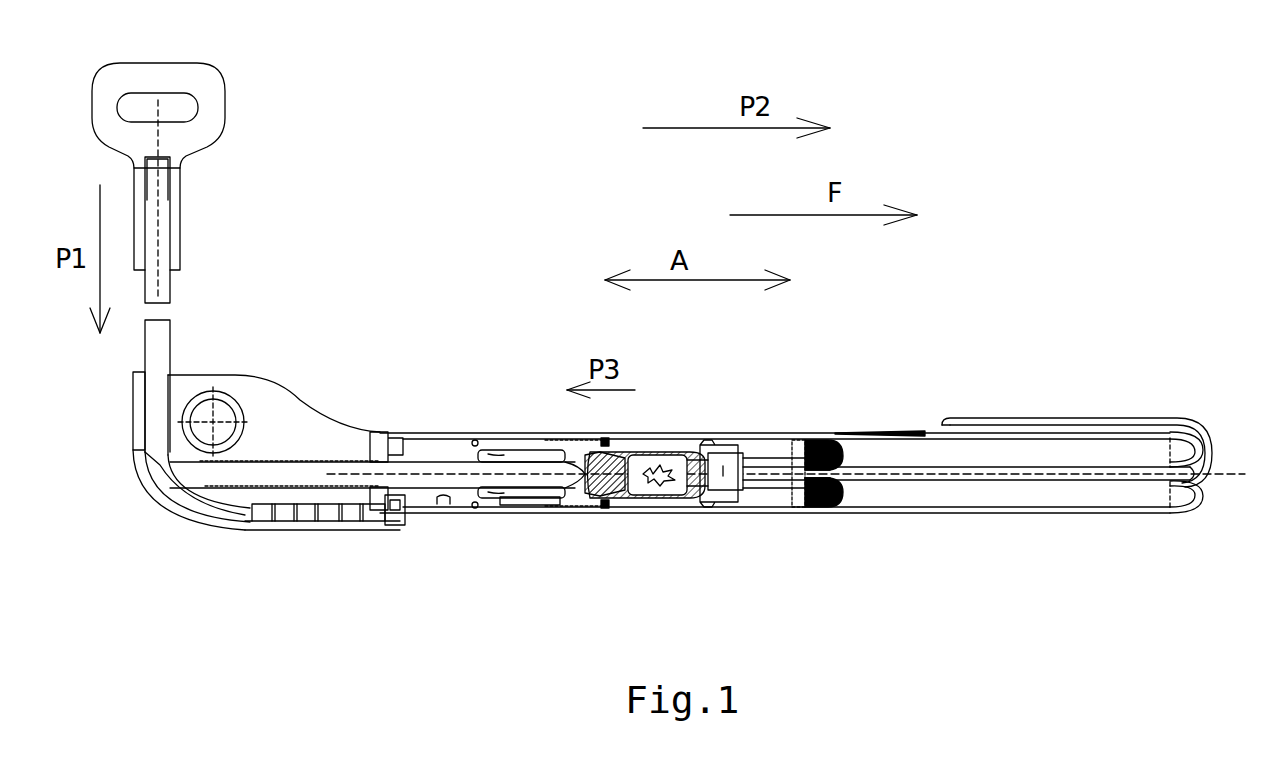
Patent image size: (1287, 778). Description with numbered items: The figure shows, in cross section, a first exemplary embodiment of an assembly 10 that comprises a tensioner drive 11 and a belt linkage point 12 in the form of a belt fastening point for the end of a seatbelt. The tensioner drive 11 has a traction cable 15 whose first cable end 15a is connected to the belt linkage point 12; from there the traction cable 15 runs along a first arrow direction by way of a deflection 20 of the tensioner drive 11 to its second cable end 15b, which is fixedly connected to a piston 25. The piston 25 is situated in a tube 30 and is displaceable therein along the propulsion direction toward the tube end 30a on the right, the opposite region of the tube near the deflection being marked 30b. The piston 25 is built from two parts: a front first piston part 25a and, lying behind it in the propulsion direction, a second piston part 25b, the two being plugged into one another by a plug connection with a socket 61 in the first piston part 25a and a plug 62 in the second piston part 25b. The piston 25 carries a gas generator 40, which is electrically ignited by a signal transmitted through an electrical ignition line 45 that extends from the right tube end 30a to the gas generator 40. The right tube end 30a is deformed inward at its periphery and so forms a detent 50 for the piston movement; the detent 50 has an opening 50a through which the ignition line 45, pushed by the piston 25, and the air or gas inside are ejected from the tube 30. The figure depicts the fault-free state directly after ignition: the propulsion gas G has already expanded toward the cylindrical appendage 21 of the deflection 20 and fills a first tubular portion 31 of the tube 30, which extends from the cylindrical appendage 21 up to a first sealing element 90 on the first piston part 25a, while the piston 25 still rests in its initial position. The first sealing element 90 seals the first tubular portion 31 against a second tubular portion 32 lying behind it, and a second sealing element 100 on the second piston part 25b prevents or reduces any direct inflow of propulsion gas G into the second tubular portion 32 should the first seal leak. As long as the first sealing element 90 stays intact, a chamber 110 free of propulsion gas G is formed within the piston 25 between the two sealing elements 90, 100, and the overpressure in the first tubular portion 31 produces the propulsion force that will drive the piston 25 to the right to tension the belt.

The assembly 10 is at (318, 183).
The tensioner drive 11 is at (237, 378).
The belt linkage point 12 is at (210, 86).
The traction cable 15 is at (359, 327).
The first cable end 15a is at (165, 162).
The second cable end 15b is at (515, 463).
The deflection 20 is at (290, 425).
The cylindrical appendage 21 is at (430, 458).
The piston 25 is at (762, 387).
The first piston part 25a is at (677, 498).
The second piston part 25b is at (820, 502).
The tube 30 is at (786, 510).
The tube end 30a is at (1160, 506).
The proximal end of outer tube 30b is at (405, 500).
The first tubular portion 31 is at (545, 506).
The second tubular portion 32 is at (937, 443).
The gas generator 40 is at (680, 455).
The electrical ignition line 45 is at (1145, 423).
The detent 50 is at (1011, 522).
The opening 50a is at (1195, 478).
The socket 61 is at (728, 490).
The plug 62 is at (760, 480).
The first sealing element 90 is at (608, 440).
The second sealing element 100 is at (800, 438).
The chamber 110 is at (752, 446).
The propulsion gas G is at (608, 500).